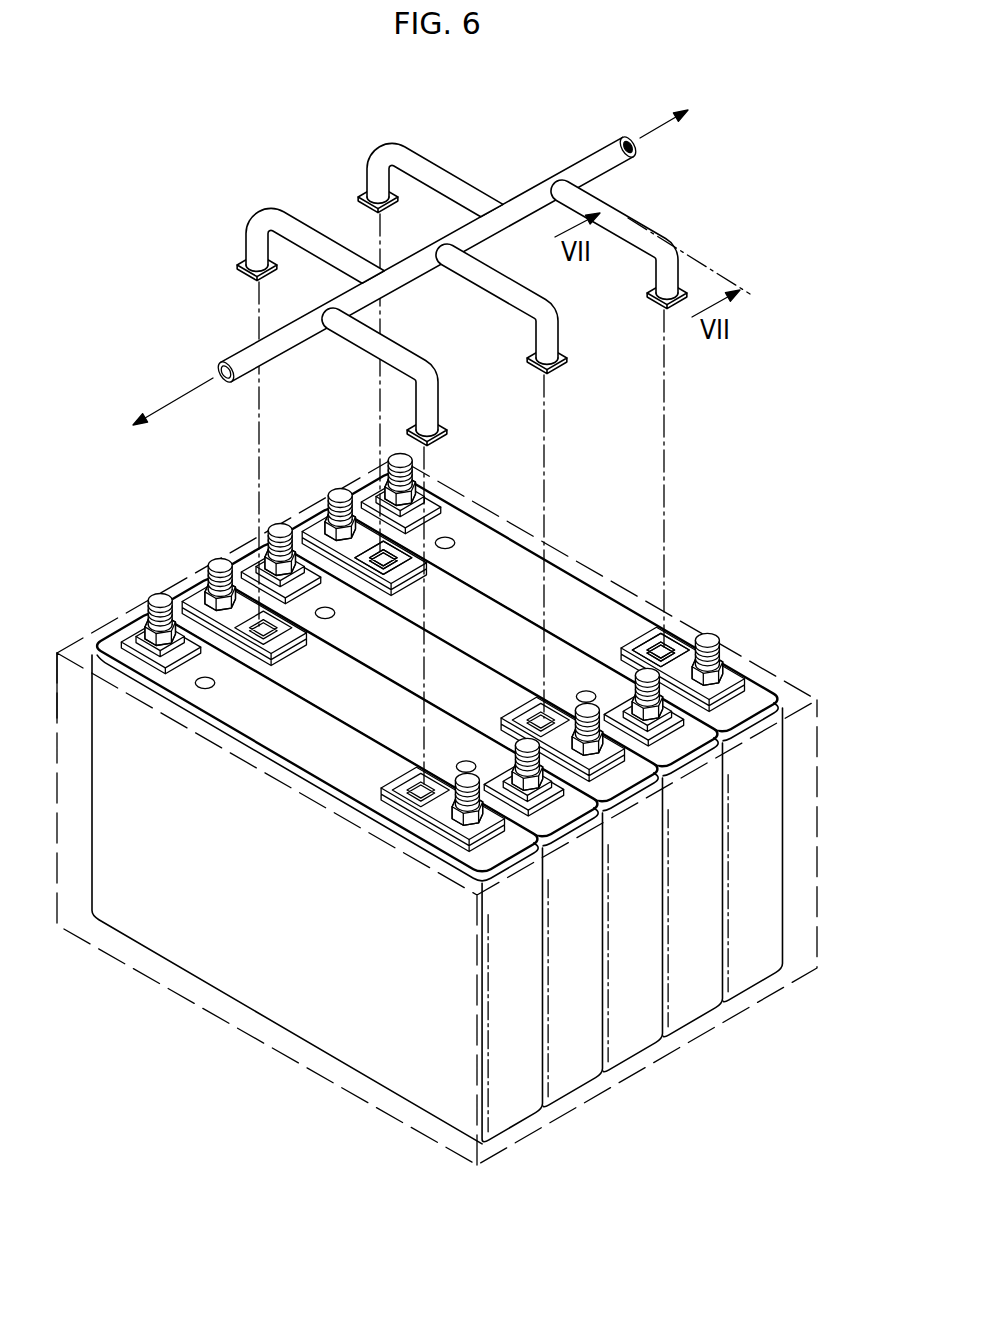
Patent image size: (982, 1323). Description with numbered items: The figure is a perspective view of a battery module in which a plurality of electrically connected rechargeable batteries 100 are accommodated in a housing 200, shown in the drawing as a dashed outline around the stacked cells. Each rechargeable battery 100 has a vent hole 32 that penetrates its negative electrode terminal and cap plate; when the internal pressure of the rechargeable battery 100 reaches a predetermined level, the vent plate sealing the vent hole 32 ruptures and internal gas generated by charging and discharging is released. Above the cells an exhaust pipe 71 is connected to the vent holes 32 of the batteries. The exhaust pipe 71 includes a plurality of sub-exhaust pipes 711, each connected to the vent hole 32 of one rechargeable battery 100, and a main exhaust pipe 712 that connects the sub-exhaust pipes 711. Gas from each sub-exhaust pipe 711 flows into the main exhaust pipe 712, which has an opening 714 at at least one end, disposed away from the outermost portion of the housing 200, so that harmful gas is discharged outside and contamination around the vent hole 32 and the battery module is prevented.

The exhaust pipe 71 is at (444, 277).
The sub-exhaust pipe 711 is at (439, 398).
The main exhaust pipe 712 is at (417, 292).
The opening 714 is at (224, 385).
The vent hole 32 is at (400, 548).
The rechargeable battery 100 is at (566, 596).
The housing 200 is at (491, 810).